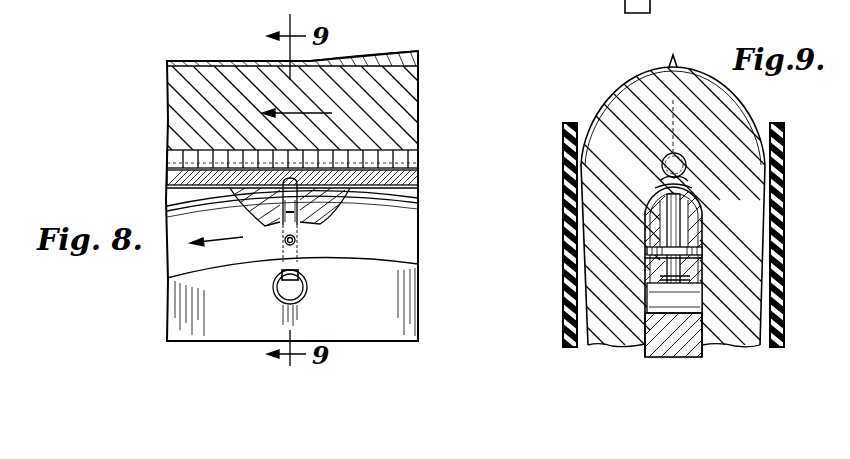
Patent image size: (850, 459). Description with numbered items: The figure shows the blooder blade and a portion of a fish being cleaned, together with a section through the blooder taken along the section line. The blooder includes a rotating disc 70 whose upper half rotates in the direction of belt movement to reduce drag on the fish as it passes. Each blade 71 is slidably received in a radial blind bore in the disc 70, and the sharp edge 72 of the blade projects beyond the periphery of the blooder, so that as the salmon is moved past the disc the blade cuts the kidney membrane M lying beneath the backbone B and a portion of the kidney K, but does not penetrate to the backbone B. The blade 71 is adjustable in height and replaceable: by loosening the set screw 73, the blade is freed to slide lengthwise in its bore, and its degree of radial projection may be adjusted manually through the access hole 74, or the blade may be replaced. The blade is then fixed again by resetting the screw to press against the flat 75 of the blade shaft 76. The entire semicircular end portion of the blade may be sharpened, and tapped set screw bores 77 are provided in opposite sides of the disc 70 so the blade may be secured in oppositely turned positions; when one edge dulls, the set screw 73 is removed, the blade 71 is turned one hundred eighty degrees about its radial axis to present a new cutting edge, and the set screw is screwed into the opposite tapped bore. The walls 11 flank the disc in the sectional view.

In FIG. 9, the guide walls 11 is at (565, 204).
In FIG. 8, the rotating disc 70 is at (400, 250).
In FIG. 9, the rotating disc 70 is at (673, 342).
In FIG. 8, the blade 71 is at (286, 212).
In FIG. 8, the sharp edge 72 is at (312, 190).
In FIG. 9, the sharp edge 72 is at (660, 201).
In FIG. 8, the set screw 73 is at (296, 240).
In FIG. 9, the set screw 73 is at (700, 252).
In FIG. 8, the access hole 74 is at (307, 290).
In FIG. 9, the access hole 74 is at (697, 285).
In FIG. 9, the flat 75 is at (681, 233).
In FIG. 9, the blade shaft 76 is at (673, 280).
In FIG. 9, the tapped set screw bore 77 is at (687, 262).
In FIG. 8, the backbone B is at (417, 162).
In FIG. 9, the backbone B is at (682, 163).
In FIG. 8, the kidney K is at (417, 180).
In FIG. 9, the kidney K is at (697, 187).
In FIG. 8, the kidney membrane M is at (407, 195).